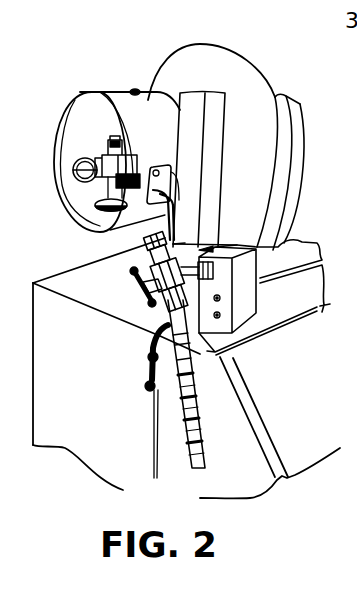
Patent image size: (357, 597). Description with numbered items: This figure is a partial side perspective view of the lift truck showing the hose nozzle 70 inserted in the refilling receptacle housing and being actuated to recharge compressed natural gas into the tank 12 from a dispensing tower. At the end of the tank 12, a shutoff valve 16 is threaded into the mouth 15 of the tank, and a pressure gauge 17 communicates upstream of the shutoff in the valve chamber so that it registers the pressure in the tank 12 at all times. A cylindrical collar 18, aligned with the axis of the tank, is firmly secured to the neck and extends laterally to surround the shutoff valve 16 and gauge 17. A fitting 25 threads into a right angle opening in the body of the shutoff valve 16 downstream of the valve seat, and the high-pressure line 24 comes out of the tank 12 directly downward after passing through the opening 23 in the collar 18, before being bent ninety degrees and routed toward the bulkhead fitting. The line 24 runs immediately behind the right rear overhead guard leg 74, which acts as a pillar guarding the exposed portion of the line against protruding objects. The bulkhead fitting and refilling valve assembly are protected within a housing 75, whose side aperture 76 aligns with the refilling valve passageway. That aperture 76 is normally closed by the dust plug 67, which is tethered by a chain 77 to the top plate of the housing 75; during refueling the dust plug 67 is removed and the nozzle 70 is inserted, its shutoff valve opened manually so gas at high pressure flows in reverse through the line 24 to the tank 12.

The tank 12 is at (232, 76).
The mouth 15 is at (100, 92).
The shutoff valve 16 is at (108, 152).
The pressure gauge 17 is at (66, 192).
The cylindrical collar 18 is at (116, 90).
The opening 23 is at (153, 167).
The high-pressure line 24 is at (170, 203).
The fitting 25 is at (84, 220).
The dust plug 67 is at (146, 386).
The hose nozzle 70 is at (148, 263).
The overhead guard leg 74 is at (201, 142).
The housing 75 is at (249, 305).
The aperture 76 is at (233, 281).
The chain 77 is at (150, 350).